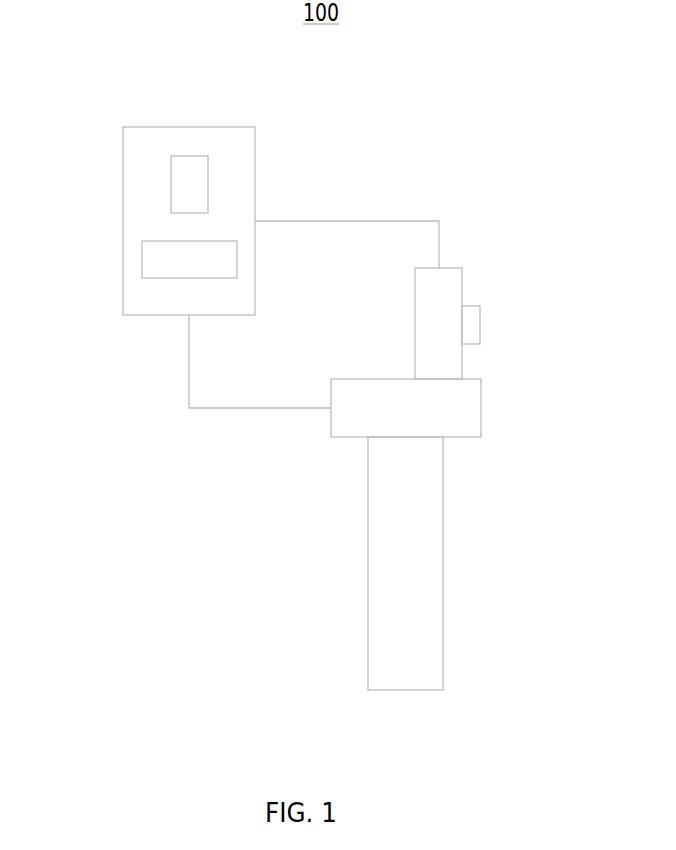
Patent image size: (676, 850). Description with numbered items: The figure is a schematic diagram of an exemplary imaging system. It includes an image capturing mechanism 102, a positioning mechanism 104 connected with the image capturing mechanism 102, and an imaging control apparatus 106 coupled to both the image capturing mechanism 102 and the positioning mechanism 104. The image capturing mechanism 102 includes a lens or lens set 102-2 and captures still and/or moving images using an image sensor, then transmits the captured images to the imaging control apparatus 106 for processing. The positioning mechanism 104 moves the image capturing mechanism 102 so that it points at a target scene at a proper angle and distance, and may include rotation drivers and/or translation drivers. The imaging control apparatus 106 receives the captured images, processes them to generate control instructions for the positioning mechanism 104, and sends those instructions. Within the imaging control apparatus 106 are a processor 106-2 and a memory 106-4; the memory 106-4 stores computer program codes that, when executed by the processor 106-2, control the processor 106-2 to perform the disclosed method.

The image capturing mechanism 102 is at (462, 268).
The lens or lens set 102-2 is at (480, 322).
The positioning mechanism 104 is at (368, 562).
The imaging control apparatus 106 is at (123, 222).
The processor 106-2 is at (189, 156).
The memory 106-4 is at (190, 278).